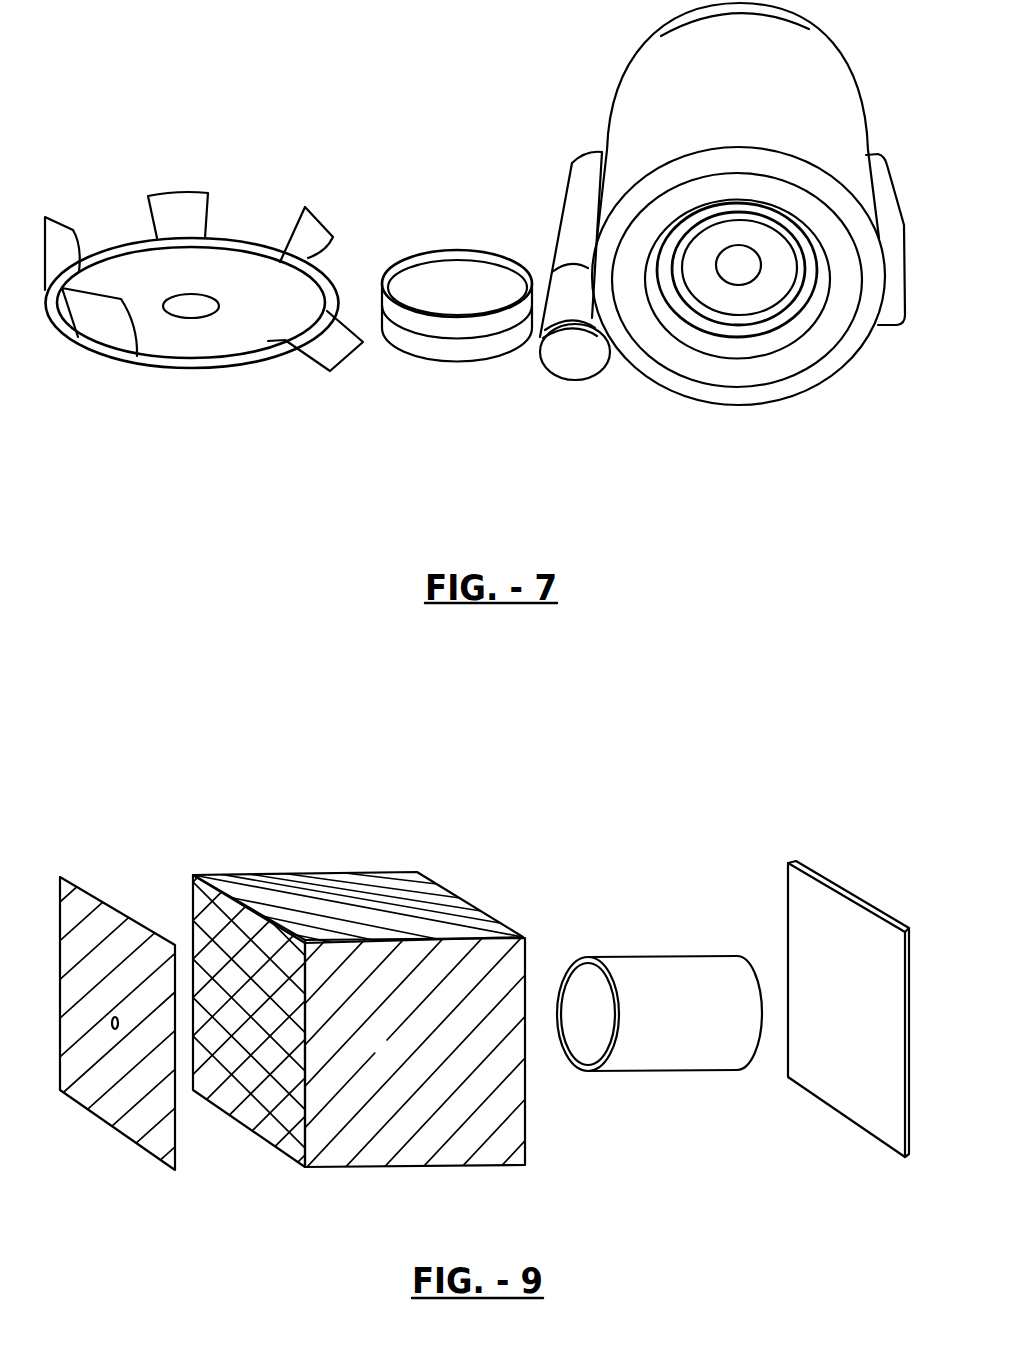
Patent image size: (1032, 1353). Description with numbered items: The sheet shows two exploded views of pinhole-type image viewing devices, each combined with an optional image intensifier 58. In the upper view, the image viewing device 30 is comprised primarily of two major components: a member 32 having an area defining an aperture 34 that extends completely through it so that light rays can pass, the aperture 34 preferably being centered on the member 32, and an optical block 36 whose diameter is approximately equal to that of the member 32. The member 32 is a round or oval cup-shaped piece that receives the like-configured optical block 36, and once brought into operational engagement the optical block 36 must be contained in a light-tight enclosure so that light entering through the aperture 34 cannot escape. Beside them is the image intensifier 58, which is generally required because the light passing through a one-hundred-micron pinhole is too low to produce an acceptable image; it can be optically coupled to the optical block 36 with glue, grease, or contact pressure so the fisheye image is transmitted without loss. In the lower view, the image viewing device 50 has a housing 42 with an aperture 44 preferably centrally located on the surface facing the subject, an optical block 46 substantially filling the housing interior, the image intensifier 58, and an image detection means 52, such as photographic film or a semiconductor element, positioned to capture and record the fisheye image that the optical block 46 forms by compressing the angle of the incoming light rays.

In FIG. 7, the image viewing device 30 is at (288, 374).
In FIG. 7, the member 32 is at (204, 325).
In FIG. 7, the aperture 34 is at (190, 313).
In FIG. 7, the optical block 36 is at (457, 351).
In FIG. 7, the image intensifier 58 is at (757, 405).
In FIG. 9, the image intensifier 58 is at (684, 926).
In FIG. 9, the housing 42 is at (112, 1023).
In FIG. 9, the aperture 44 is at (112, 1027).
In FIG. 9, the optical block 46 is at (408, 1066).
In FIG. 9, the image viewing device 50 is at (368, 1207).
In FIG. 9, the image detection means 52 is at (878, 1146).